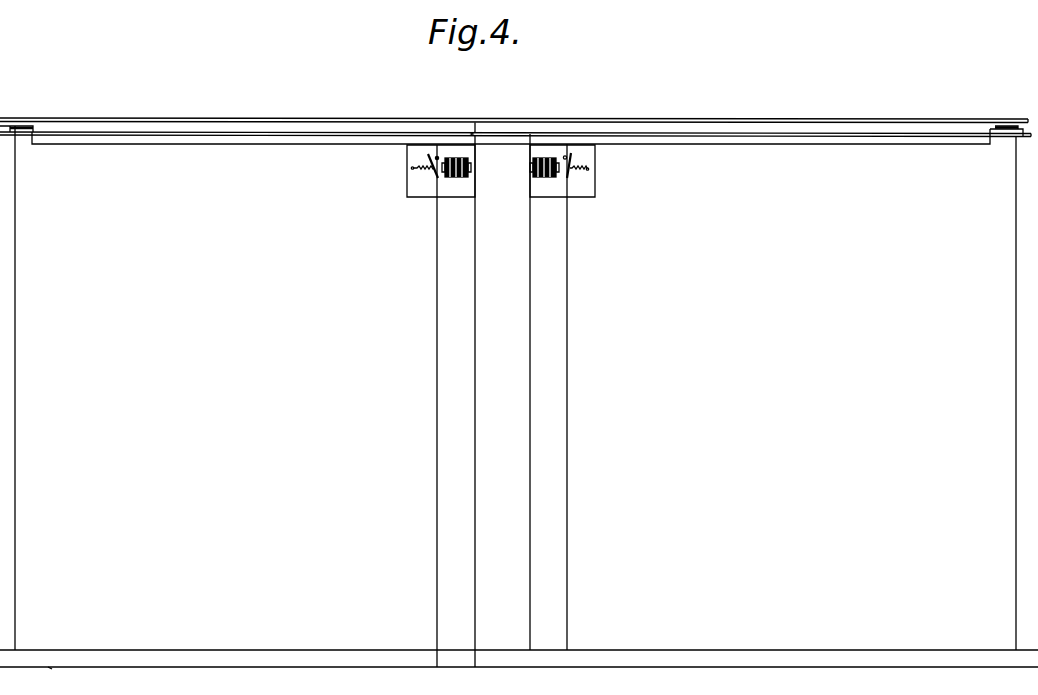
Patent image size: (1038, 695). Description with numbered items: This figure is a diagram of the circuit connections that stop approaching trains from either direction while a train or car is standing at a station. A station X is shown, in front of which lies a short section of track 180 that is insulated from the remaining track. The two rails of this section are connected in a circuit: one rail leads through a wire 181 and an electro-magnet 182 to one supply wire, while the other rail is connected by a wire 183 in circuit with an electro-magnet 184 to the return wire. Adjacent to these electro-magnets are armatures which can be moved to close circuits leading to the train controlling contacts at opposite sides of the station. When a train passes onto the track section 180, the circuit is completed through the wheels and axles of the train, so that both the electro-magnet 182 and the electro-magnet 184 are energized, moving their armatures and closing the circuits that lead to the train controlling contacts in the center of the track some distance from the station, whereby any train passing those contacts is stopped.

The short section of track 180 is at (540, 111).
The wire 181 is at (530, 233).
The electro-magnet 182 is at (547, 178).
The wire 183 is at (475, 327).
The electro-magnet 184 is at (468, 168).
The station X is at (582, 192).